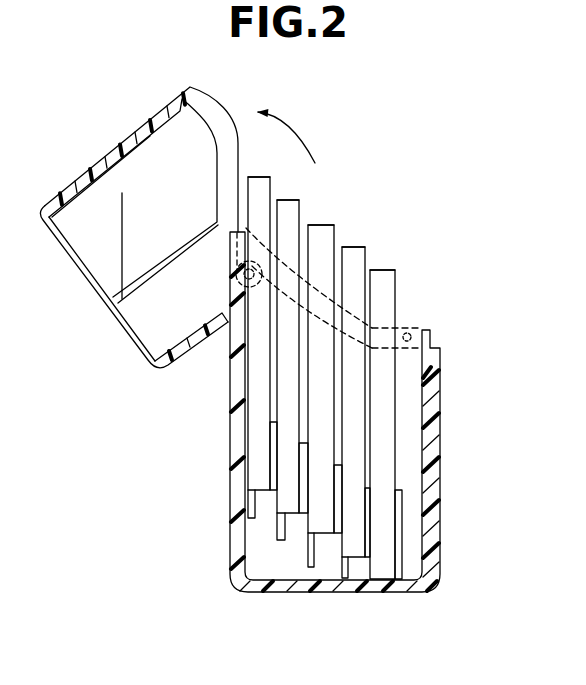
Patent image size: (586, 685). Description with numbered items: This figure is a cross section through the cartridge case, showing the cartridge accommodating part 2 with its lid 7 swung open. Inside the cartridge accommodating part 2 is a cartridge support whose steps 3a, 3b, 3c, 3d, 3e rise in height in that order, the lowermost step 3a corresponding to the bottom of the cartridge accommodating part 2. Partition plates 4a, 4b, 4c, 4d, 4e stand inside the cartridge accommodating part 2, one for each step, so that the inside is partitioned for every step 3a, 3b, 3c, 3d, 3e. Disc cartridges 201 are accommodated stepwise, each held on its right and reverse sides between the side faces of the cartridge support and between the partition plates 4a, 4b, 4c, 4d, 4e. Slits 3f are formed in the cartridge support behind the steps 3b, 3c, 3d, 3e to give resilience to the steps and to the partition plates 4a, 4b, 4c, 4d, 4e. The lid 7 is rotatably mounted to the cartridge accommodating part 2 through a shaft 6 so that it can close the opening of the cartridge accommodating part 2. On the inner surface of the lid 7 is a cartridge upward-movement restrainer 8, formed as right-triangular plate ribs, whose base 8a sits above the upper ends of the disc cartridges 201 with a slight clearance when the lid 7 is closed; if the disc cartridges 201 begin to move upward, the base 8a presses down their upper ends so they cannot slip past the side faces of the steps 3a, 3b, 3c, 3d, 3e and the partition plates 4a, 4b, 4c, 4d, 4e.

The cartridge accommodating part 2 is at (217, 432).
The lid 7 is at (100, 319).
The cartridge upward-movement restrainer 8 is at (95, 202).
The base 8a is at (122, 193).
The shaft 6 is at (228, 287).
The disc cartridge 201 is at (266, 183).
The step 3a is at (398, 580).
The step 3b is at (368, 573).
The step 3c is at (343, 570).
The step 3d is at (298, 551).
The step 3e is at (263, 526).
The slit 3f is at (248, 517).
The partition plate 4a is at (402, 523).
The partition plate 4b is at (370, 498).
The partition plate 4c is at (342, 480).
The partition plate 4d is at (308, 455).
The partition plate 4e is at (277, 438).